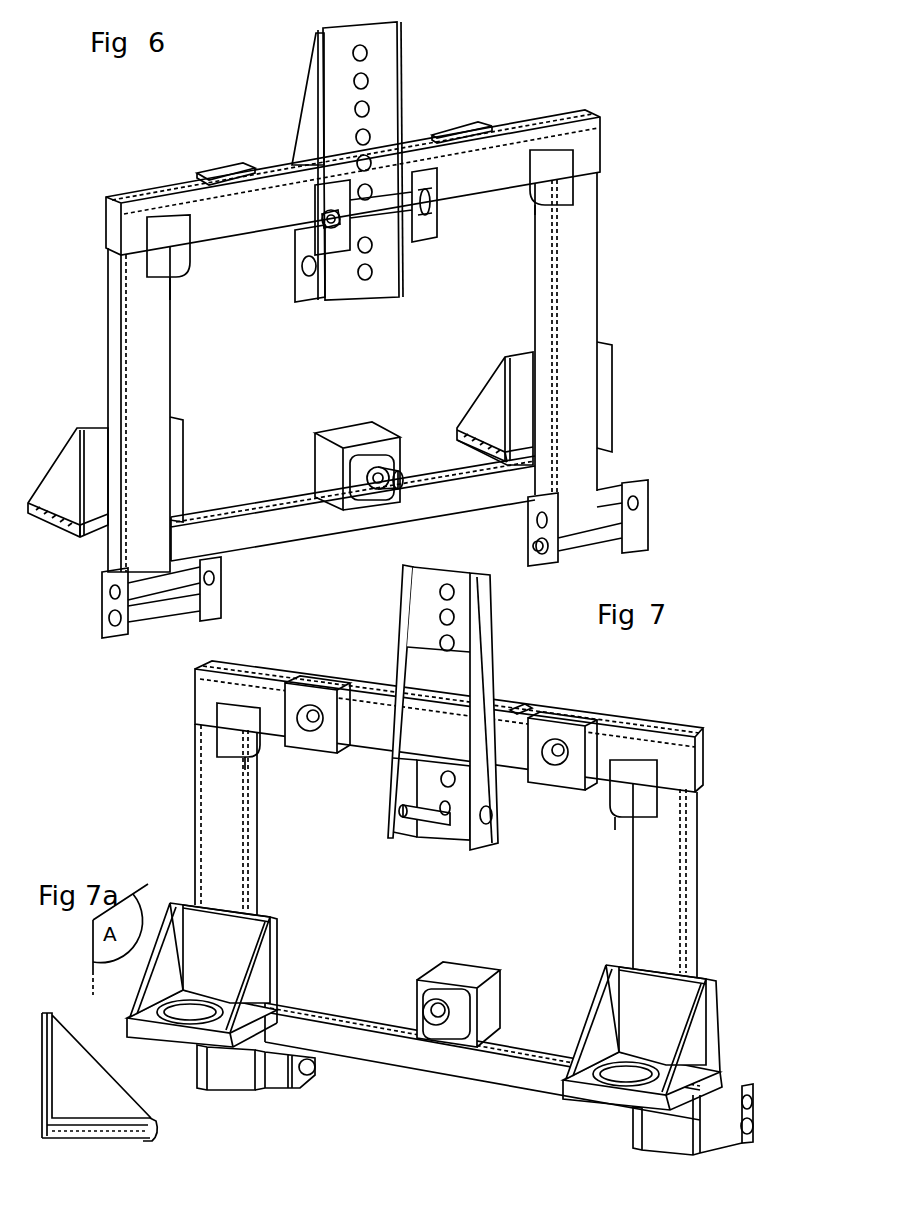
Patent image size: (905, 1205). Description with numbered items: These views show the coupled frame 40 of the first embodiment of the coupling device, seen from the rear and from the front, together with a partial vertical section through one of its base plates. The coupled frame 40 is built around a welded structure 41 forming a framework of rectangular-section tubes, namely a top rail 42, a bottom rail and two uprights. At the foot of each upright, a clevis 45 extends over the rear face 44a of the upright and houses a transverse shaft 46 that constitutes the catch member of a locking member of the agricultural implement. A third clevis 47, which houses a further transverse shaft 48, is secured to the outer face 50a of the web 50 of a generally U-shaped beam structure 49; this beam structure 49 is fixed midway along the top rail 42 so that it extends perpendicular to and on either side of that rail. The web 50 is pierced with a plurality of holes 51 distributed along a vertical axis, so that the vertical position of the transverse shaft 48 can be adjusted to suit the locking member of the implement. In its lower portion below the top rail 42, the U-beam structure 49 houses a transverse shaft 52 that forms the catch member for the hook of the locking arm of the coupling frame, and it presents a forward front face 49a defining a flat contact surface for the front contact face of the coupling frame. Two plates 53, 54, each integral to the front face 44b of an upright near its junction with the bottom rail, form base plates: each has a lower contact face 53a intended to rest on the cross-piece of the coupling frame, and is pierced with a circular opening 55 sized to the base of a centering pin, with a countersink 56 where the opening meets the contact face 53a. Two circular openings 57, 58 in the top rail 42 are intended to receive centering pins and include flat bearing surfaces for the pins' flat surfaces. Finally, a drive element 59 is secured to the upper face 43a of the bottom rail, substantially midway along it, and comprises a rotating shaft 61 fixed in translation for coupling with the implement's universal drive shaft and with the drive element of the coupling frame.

In FIG. 6, the coupled frame 40 is at (634, 304).
In FIG. 6, the welded structure 41 is at (594, 295).
In FIG. 6, the top rail 42 is at (227, 220).
In FIG. 7, the upper face of the bottom rail 43a is at (300, 1012).
In FIG. 6, the rear face of an upright 44a is at (128, 284).
In FIG. 7, the front face of an upright 44b is at (181, 809).
In FIG. 6, the clevis 45 is at (107, 592).
In FIG. 7, the clevis 45 is at (745, 1085).
In FIG. 6, the transverse shaft 46 is at (162, 613).
In FIG. 6, the third clevis 47 is at (438, 218).
In FIG. 6, the transverse shaft 48 is at (390, 212).
In FIG. 6, the U-shaped beam structure 49 is at (440, 104).
In FIG. 7, the U-shaped beam structure 49 is at (518, 803).
In FIG. 7, the forward front face 49a is at (433, 720).
In FIG. 6, the web 50 is at (405, 57).
In FIG. 7, the web 50 is at (417, 587).
In FIG. 6, the outer face of the web 50a is at (397, 95).
In FIG. 6, the holes 51 is at (347, 54).
In FIG. 7, the transverse shaft 52 is at (432, 813).
In FIG. 6, the plate 53 is at (463, 433).
In FIG. 7, the plate 53 is at (175, 945).
In FIG. 7A, the plate 53 is at (132, 1117).
In FIG. 7A, the lower contact face 53a is at (103, 1142).
In FIG. 6, the plate 54 is at (47, 518).
In FIG. 7, the plate 54 is at (587, 1093).
In FIG. 7A, the circular opening 55 is at (91, 1125).
In FIG. 7A, the countersink 56 is at (162, 1142).
In FIG. 7, the circular opening 57 is at (310, 715).
In FIG. 7, the circular opening 58 is at (553, 745).
In FIG. 6, the drive element 59 is at (333, 433).
In FIG. 7, the drive element 59 is at (493, 1012).
In FIG. 6, the rotating shaft 61 is at (390, 440).
In FIG. 7, the rotating shaft 61 is at (433, 1022).